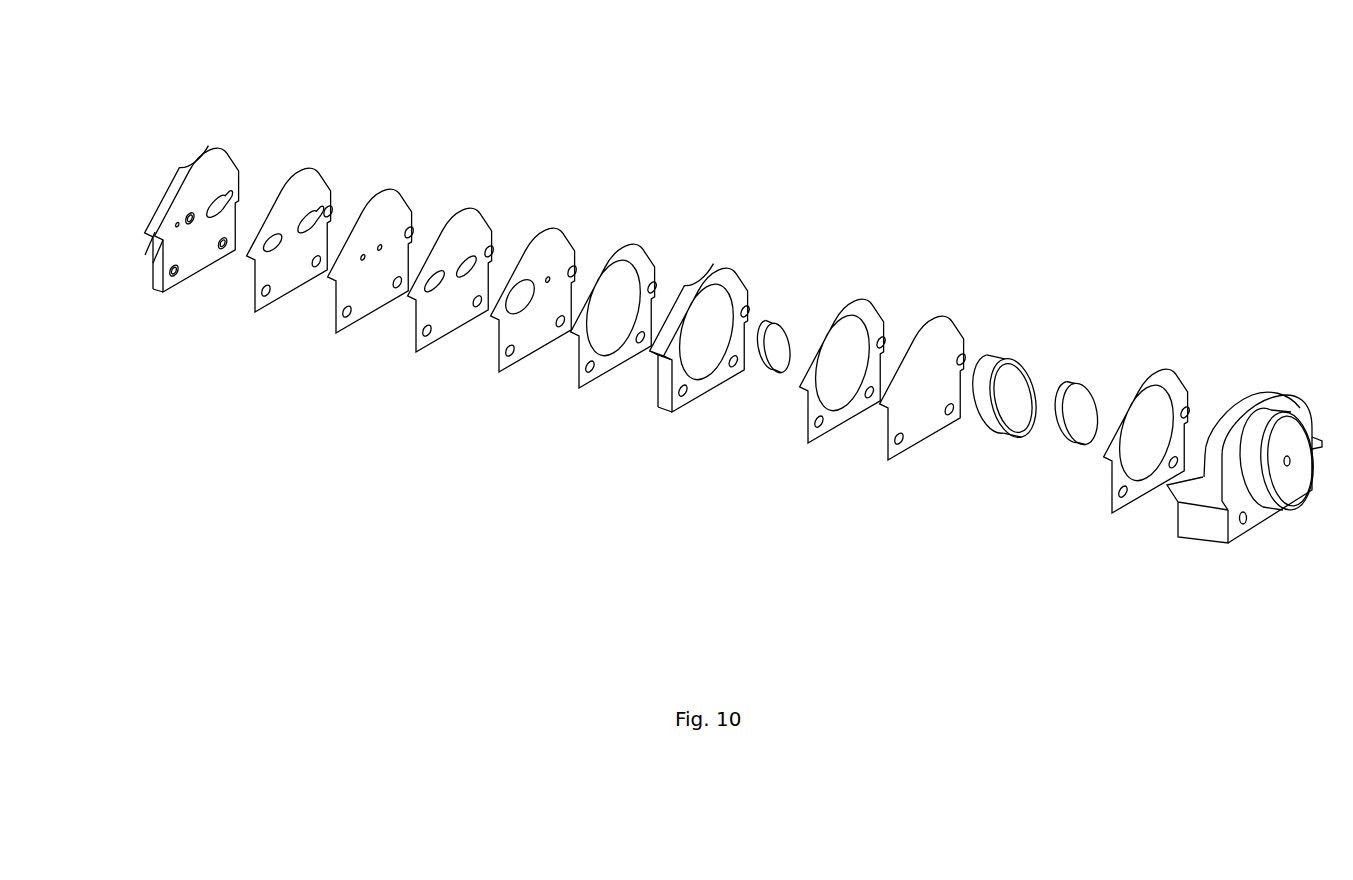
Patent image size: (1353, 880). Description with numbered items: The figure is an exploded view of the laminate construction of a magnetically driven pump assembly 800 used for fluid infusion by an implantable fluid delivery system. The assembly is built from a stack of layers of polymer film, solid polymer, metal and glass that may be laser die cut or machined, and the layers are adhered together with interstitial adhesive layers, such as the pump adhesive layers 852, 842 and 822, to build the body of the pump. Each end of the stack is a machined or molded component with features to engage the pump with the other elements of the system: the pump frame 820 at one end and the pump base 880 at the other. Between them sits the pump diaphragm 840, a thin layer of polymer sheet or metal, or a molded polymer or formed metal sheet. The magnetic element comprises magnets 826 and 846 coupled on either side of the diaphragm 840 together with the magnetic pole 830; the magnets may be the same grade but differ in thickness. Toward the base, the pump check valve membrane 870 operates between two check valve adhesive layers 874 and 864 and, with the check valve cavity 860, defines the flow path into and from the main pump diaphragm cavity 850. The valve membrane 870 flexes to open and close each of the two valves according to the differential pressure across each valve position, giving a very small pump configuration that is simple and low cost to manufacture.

The magnetically driven pump assembly 800 is at (1098, 82).
The pump frame 820 is at (1250, 518).
The pump adhesive layer 822 is at (1117, 502).
The magnet 826 is at (1077, 397).
The magnetic pole 830 is at (1002, 380).
The pump diaphragm 840 is at (924, 432).
The pump adhesive layer 842 is at (836, 417).
The magnet 846 is at (776, 339).
The main pump diaphragm cavity 850 is at (699, 353).
The pump adhesive layer 852 is at (602, 363).
The check valve cavity 860 is at (514, 298).
The check valve adhesive layer 864 is at (444, 320).
The pump check valve membrane 870 is at (358, 305).
The check valve adhesive layer 874 is at (286, 292).
The pump base 880 is at (193, 268).